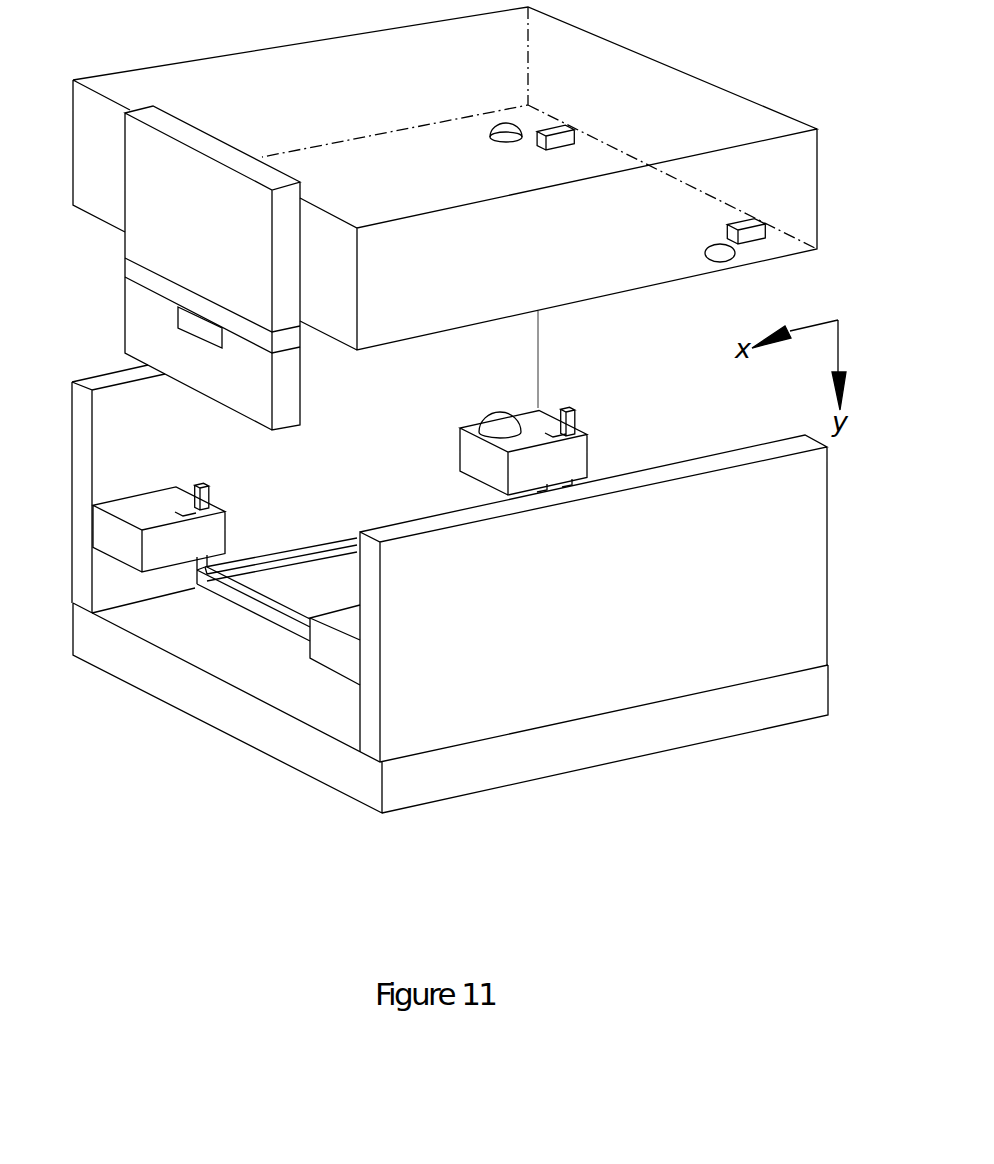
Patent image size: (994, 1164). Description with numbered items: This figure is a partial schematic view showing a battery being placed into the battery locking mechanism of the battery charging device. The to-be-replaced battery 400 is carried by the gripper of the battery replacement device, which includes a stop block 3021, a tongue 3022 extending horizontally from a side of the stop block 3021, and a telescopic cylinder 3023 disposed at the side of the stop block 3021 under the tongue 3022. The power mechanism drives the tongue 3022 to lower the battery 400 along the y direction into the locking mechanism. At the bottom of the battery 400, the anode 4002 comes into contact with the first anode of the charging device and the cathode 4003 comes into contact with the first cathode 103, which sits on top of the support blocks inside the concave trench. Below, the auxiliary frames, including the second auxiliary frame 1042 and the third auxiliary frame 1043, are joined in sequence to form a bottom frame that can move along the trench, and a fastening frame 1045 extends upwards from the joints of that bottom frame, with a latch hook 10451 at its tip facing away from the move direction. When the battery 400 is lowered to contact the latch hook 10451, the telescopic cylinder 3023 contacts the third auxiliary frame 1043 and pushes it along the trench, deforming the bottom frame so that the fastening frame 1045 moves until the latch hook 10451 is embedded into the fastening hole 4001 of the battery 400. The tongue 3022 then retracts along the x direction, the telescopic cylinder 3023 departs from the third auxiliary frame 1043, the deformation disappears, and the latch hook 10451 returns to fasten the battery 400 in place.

The to-be-replaced battery 400 is at (678, 100).
The cathode 4003 is at (506, 128).
The fastening hole 4001 is at (752, 223).
The anode 4002 is at (727, 255).
The stop block 3021 is at (163, 240).
The tongue 3022 is at (305, 342).
The telescopic cylinder 3023 is at (197, 325).
The first cathode 103 is at (502, 423).
The fastening frame 1045 is at (580, 428).
The latch hook 10451 is at (563, 408).
The second auxiliary frame 1042 is at (333, 550).
The third auxiliary frame 1043 is at (245, 605).